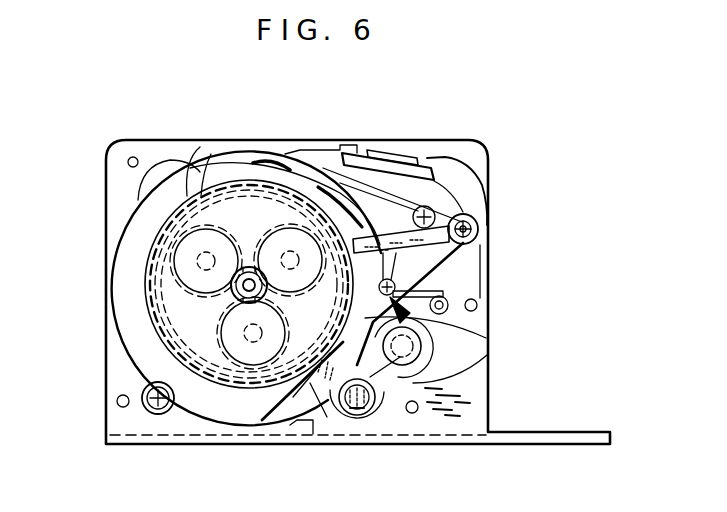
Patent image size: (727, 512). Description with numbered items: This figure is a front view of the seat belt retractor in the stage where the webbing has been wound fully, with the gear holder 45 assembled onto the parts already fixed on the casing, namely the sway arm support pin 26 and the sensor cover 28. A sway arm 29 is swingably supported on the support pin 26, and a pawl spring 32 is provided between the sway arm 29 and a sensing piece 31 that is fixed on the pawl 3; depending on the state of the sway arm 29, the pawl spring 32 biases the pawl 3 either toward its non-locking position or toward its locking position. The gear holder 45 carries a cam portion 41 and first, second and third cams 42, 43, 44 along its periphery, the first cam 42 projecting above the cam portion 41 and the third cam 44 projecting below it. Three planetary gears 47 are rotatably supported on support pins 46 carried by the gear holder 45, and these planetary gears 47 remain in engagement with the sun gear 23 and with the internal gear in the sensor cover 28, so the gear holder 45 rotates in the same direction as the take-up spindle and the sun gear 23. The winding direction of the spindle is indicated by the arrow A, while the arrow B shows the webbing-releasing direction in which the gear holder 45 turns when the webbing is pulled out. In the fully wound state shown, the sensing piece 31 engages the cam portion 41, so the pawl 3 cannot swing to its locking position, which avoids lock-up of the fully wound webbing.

The pawl 3 is at (420, 375).
The sun gear 23 is at (225, 320).
The sway arm support pin 26 is at (478, 229).
The sensor cover 28 is at (128, 236).
The sway arm 29 is at (440, 208).
The sensing piece 31 is at (455, 385).
The pawl spring 32 is at (430, 275).
The cam portion 41 is at (443, 333).
The first cam 42 is at (357, 416).
The second cam 43 is at (315, 388).
The third cam 44 is at (207, 187).
The gear holder 45 is at (190, 318).
The support pins 46 is at (231, 285).
The planetary gears 47 is at (253, 357).
The webbing-winding direction arrow A is at (288, 160).
The webbing-releasing direction arrow B is at (345, 185).